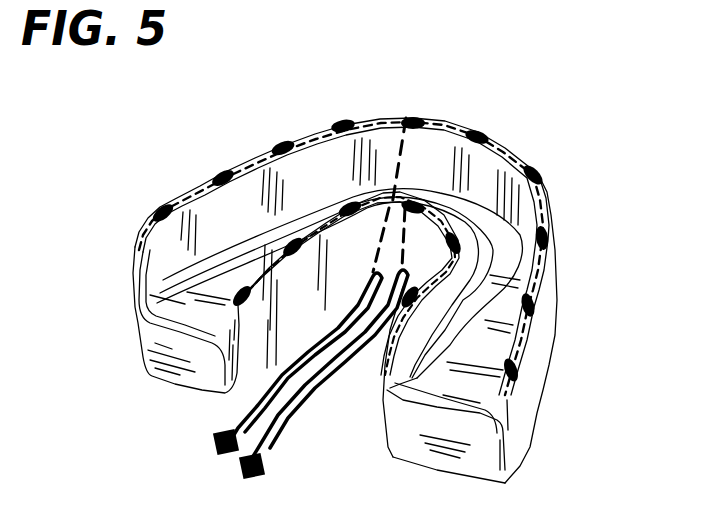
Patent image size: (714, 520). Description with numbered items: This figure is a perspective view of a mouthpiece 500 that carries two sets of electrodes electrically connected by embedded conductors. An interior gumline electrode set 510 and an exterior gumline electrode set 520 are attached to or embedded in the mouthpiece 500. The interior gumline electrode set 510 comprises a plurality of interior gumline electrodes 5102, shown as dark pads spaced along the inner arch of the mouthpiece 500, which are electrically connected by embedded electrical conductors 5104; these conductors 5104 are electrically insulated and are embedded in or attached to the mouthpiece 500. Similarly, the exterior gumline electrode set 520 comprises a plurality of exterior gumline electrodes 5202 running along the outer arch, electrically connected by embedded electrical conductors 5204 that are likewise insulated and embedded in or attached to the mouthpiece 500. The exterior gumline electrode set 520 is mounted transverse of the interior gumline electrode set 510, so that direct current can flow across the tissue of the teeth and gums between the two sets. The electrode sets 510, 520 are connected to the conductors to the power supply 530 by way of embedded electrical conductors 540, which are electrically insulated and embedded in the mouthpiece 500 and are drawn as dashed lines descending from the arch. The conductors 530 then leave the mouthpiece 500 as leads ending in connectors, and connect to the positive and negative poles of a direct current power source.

The mouthpiece 500 is at (528, 415).
The exterior gumline electrode set 520 is at (417, 106).
The embedded electrical conductors 5204 is at (312, 132).
The exterior gumline electrodes 5202 is at (478, 130).
The interior gumline electrode set 510 is at (301, 260).
The interior gumline electrodes 5102 is at (250, 302).
The embedded electrical conductors 5104 is at (433, 276).
The embedded electrical conductors 540 is at (403, 231).
The conductors to the power supply 530 is at (252, 406).